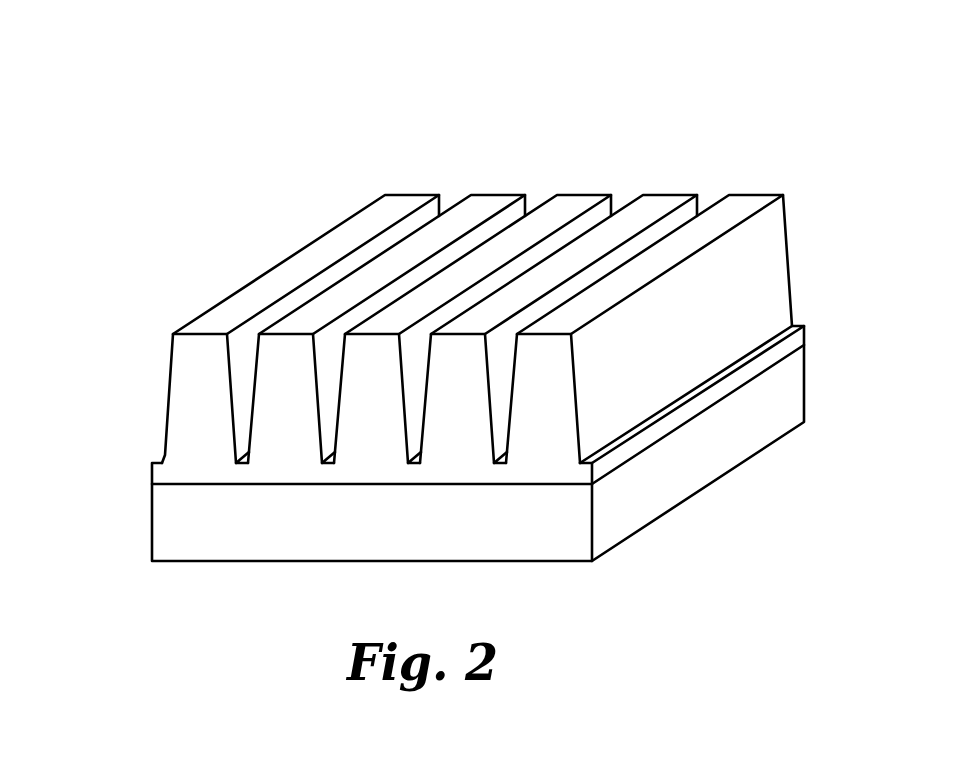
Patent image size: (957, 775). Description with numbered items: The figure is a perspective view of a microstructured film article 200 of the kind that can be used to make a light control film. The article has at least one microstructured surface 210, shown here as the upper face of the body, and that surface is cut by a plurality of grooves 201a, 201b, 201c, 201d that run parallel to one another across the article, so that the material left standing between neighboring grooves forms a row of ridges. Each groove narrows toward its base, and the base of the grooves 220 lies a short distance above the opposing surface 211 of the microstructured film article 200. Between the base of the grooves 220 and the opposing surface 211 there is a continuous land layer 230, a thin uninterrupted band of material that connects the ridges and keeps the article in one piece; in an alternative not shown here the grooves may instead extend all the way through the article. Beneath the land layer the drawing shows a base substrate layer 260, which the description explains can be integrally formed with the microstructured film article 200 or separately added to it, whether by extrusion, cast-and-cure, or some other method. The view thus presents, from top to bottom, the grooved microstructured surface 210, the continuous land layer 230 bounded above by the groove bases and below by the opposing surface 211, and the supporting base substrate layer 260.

The microstructured film article 200 is at (238, 200).
The microstructured surface 210 is at (503, 277).
The groove 201a is at (457, 182).
The groove 201b is at (543, 182).
The groove 201c is at (627, 182).
The groove 201d is at (713, 182).
The base of the grooves 220 is at (245, 462).
The continuous land layer 230 is at (143, 484).
The base substrate layer 260 is at (318, 538).
The opposing surface 211 is at (392, 484).